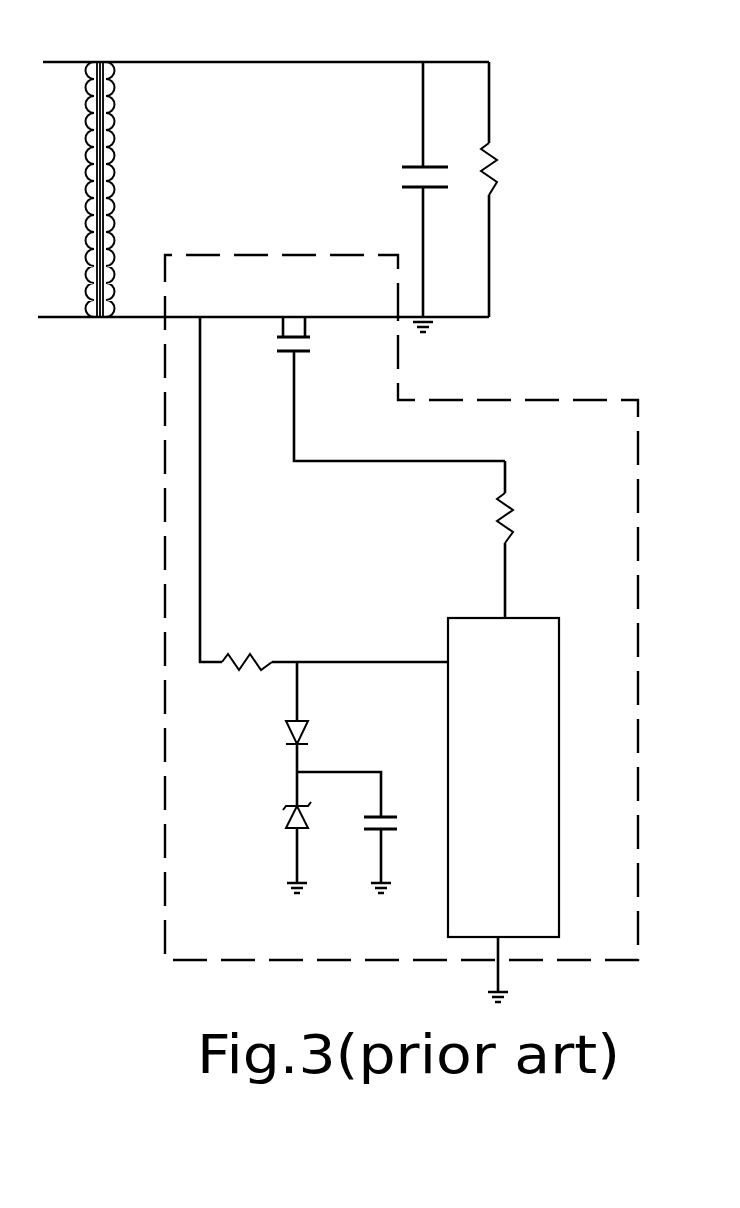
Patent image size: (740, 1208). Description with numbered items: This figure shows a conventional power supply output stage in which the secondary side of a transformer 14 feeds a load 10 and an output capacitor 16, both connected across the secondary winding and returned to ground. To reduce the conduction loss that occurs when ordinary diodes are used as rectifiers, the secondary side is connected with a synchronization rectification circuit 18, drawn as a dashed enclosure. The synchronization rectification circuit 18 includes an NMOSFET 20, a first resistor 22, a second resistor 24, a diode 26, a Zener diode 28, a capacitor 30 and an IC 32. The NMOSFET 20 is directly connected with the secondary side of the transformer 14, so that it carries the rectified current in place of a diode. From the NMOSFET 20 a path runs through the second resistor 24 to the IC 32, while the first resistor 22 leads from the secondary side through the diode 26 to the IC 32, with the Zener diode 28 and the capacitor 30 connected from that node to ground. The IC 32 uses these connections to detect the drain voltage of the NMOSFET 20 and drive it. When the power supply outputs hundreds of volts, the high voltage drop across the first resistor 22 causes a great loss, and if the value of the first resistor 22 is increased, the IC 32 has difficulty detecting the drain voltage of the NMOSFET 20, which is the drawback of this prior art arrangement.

The load 10 is at (503, 173).
The transformer 14 is at (90, 62).
The output capacitor 16 is at (410, 190).
The synchronization rectification circuit 18 is at (560, 398).
The NMOSFET 20 is at (295, 337).
The first resistor 22 is at (257, 655).
The second resistor 24 is at (515, 513).
The diode 26 is at (290, 745).
The Zener diode 28 is at (290, 832).
The capacitor 30 is at (370, 832).
The IC 32 is at (560, 722).